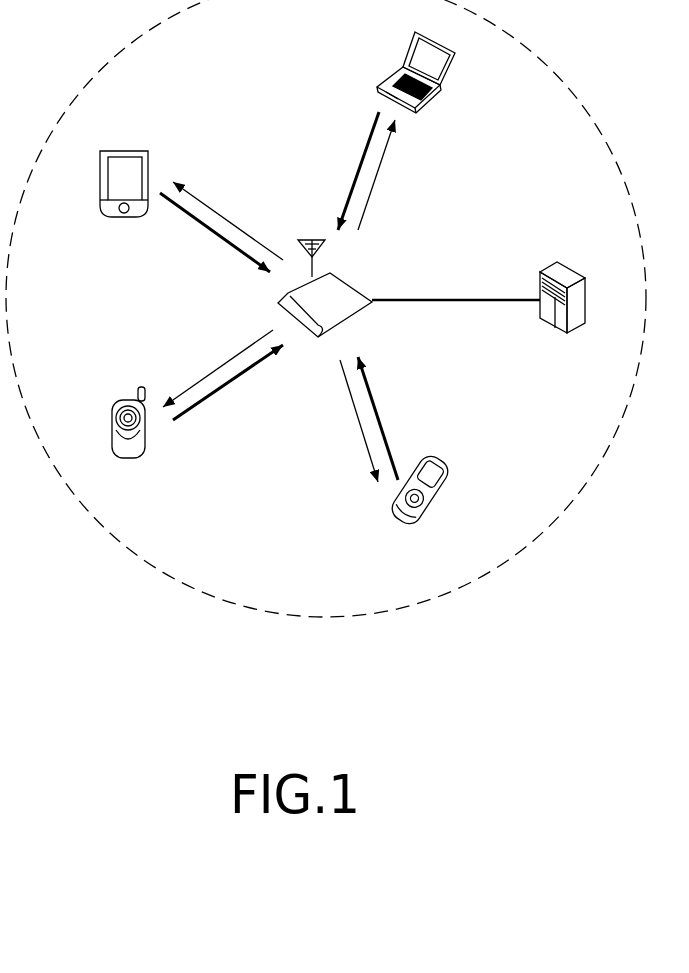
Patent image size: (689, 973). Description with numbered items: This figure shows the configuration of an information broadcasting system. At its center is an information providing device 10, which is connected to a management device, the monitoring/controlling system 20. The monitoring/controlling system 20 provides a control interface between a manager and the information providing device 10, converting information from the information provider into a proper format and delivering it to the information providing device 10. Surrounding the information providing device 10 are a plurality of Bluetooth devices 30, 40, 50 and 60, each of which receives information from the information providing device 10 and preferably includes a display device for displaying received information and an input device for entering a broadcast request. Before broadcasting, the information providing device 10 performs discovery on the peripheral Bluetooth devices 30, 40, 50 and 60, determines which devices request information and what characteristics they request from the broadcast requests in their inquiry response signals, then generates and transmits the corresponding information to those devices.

The information providing device 10 is at (352, 283).
The monitoring/controlling system 20 is at (567, 267).
The Bluetooth device 30 is at (430, 105).
The Bluetooth device 40 is at (125, 220).
The Bluetooth device 50 is at (128, 400).
The Bluetooth device 60 is at (442, 485).